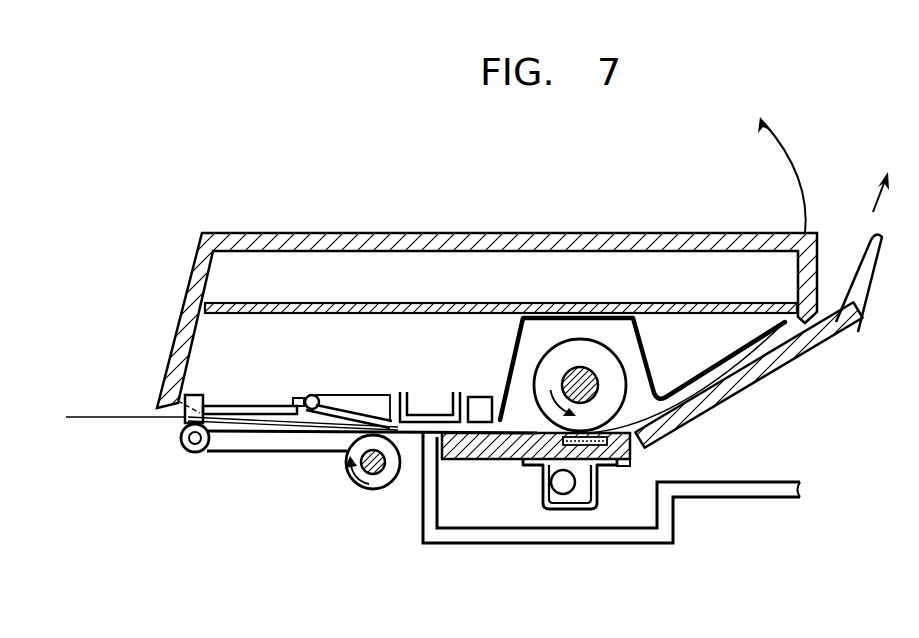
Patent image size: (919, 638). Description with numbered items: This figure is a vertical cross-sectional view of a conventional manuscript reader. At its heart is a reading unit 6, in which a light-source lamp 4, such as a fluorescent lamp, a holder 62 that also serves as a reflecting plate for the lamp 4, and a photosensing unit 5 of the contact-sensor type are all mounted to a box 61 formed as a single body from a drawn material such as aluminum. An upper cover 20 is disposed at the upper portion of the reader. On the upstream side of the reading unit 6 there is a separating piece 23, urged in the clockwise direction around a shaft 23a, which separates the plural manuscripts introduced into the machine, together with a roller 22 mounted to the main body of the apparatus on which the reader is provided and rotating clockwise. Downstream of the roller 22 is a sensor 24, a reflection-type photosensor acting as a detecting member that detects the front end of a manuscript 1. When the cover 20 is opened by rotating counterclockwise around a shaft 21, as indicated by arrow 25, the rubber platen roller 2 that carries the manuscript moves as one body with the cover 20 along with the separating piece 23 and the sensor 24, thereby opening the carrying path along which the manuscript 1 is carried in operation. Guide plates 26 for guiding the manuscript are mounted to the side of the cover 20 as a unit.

The manuscript 1 is at (876, 209).
The platen roller 2 is at (593, 358).
The light-source lamp 4 is at (574, 481).
The photosensing unit 5 is at (608, 443).
The reading unit 6 is at (565, 509).
The box 61 is at (507, 449).
The holder 62 is at (568, 509).
The upper cover 20 is at (413, 237).
The shaft 21 is at (197, 452).
The roller 22 is at (378, 494).
The separating piece 23 is at (342, 414).
The shaft 23a is at (309, 394).
The sensor 24 is at (480, 397).
The arrow 25 is at (792, 166).
The guide plates 26 is at (262, 407).